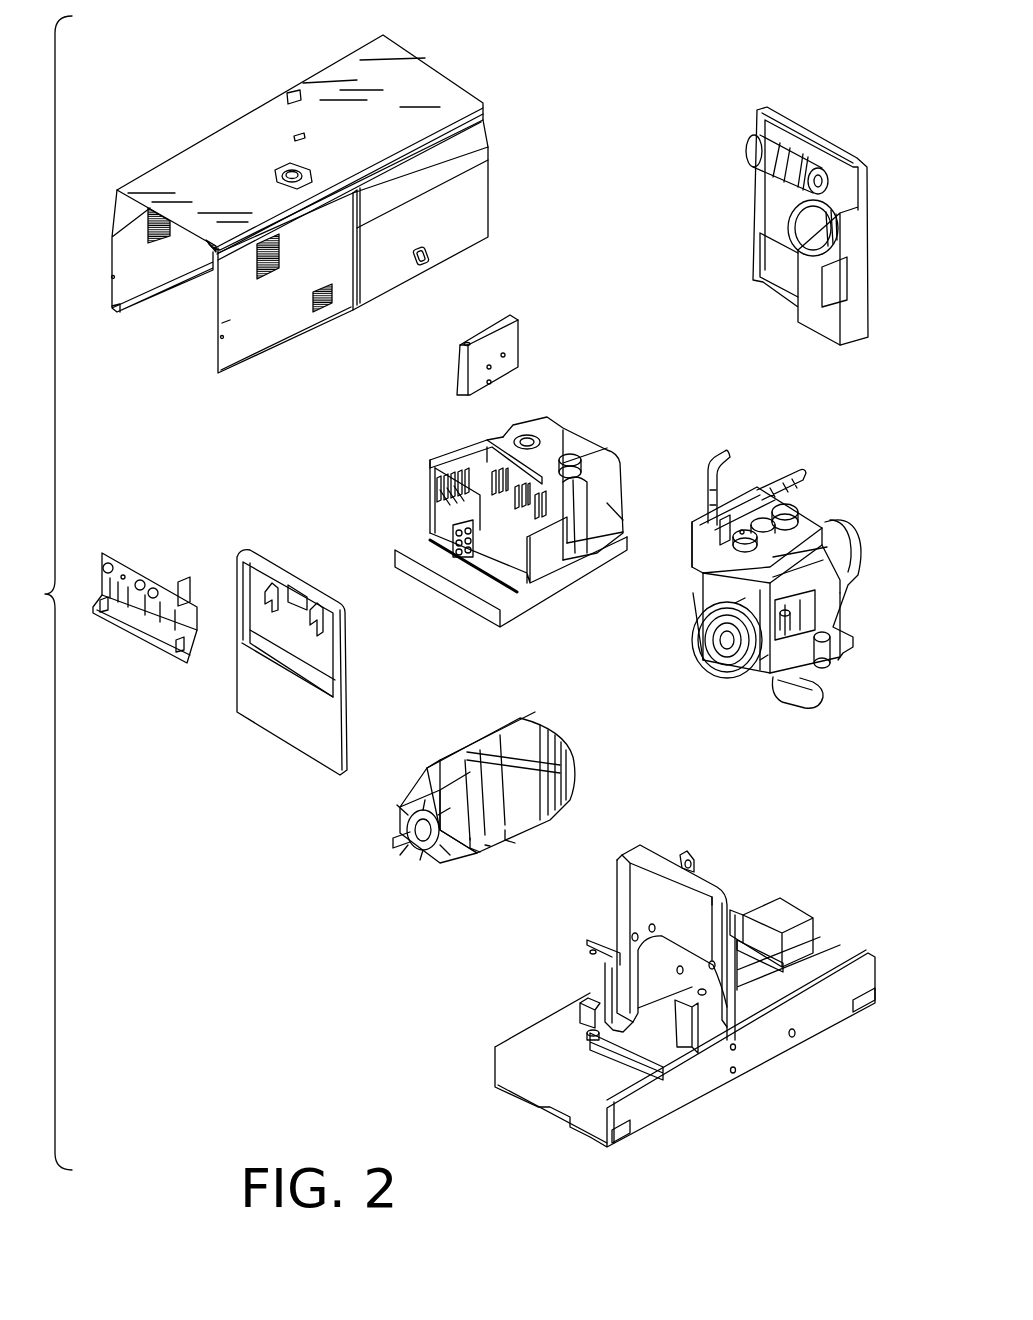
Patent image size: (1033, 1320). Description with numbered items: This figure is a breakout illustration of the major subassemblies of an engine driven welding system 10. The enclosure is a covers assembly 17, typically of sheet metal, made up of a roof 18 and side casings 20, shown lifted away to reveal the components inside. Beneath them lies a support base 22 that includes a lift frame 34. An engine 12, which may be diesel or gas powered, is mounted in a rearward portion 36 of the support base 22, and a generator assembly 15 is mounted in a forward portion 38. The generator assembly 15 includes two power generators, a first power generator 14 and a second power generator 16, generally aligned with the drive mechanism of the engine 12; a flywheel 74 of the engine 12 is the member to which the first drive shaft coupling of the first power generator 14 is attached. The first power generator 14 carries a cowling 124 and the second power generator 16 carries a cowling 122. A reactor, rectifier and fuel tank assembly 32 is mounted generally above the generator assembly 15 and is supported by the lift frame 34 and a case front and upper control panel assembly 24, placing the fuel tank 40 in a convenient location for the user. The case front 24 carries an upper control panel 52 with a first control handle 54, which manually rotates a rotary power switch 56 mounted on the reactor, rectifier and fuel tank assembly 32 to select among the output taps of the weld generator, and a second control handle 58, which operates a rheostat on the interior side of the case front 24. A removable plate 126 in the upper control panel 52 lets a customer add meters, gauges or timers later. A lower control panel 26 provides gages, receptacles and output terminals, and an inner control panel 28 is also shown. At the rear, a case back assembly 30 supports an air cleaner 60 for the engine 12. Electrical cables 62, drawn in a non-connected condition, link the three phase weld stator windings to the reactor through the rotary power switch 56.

The engine driven welding system 10 is at (38, 593).
The engine 12 is at (750, 570).
The first power generator 14 is at (465, 800).
The generator assembly 15 is at (483, 752).
The second power generator 16 is at (452, 872).
The covers assembly 17 is at (294, 222).
The roof 18 is at (347, 64).
The side casings 20 is at (118, 291).
The support base 22 is at (664, 960).
The case front and upper control panel assembly 24 is at (291, 621).
The lower control panel 26 is at (138, 566).
The inner control panel 28 is at (522, 312).
The case back assembly 30 is at (760, 216).
The reactor, rectifier and fuel tank assembly 32 is at (400, 540).
The lift frame 34 is at (662, 838).
The rearward portion 36 is at (826, 950).
The forward portion 38 is at (520, 1095).
The fuel tank 40 is at (496, 506).
The upper control panel 52 is at (262, 572).
The first control handle 54 is at (272, 593).
The rotary power switch 56 is at (420, 490).
The second control handle 58 is at (305, 623).
The air cleaner 60 is at (755, 185).
The electrical cables 62 is at (505, 508).
The flywheel 74 is at (695, 677).
The cowling 122 is at (432, 785).
The cowling 124 is at (490, 722).
The removable plate 126 is at (318, 582).